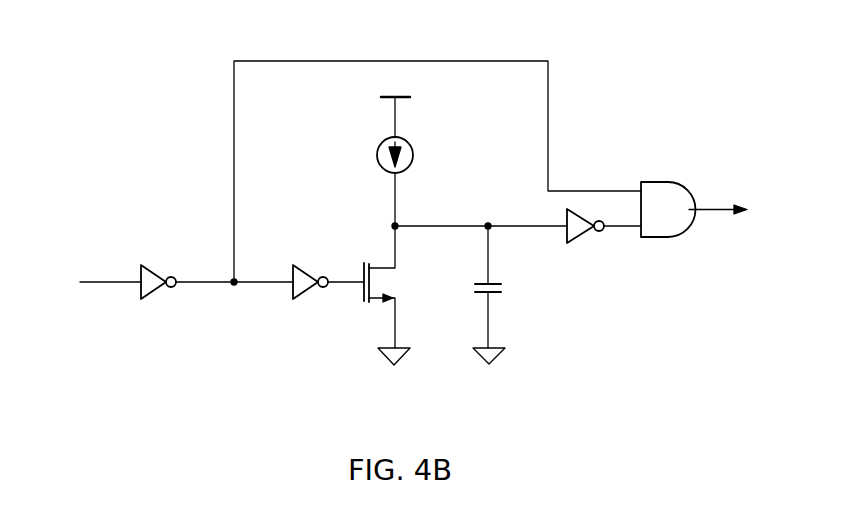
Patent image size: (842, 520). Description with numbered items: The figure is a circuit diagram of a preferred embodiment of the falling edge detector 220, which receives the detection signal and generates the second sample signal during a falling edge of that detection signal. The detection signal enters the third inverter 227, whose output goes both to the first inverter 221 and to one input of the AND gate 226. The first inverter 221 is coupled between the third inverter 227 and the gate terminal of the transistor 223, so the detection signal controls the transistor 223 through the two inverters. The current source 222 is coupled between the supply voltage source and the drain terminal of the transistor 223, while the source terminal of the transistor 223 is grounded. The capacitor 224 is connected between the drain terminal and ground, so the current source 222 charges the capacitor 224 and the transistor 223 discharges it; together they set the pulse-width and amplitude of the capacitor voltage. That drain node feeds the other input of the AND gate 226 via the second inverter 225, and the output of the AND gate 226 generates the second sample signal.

The falling edge detector 220 is at (795, 53).
The first inverter 221 is at (310, 268).
The current source 222 is at (415, 155).
The transistor 223 is at (399, 295).
The capacitor 224 is at (507, 295).
The second inverter 225 is at (585, 241).
The AND gate 226 is at (667, 195).
The third inverter 227 is at (158, 268).